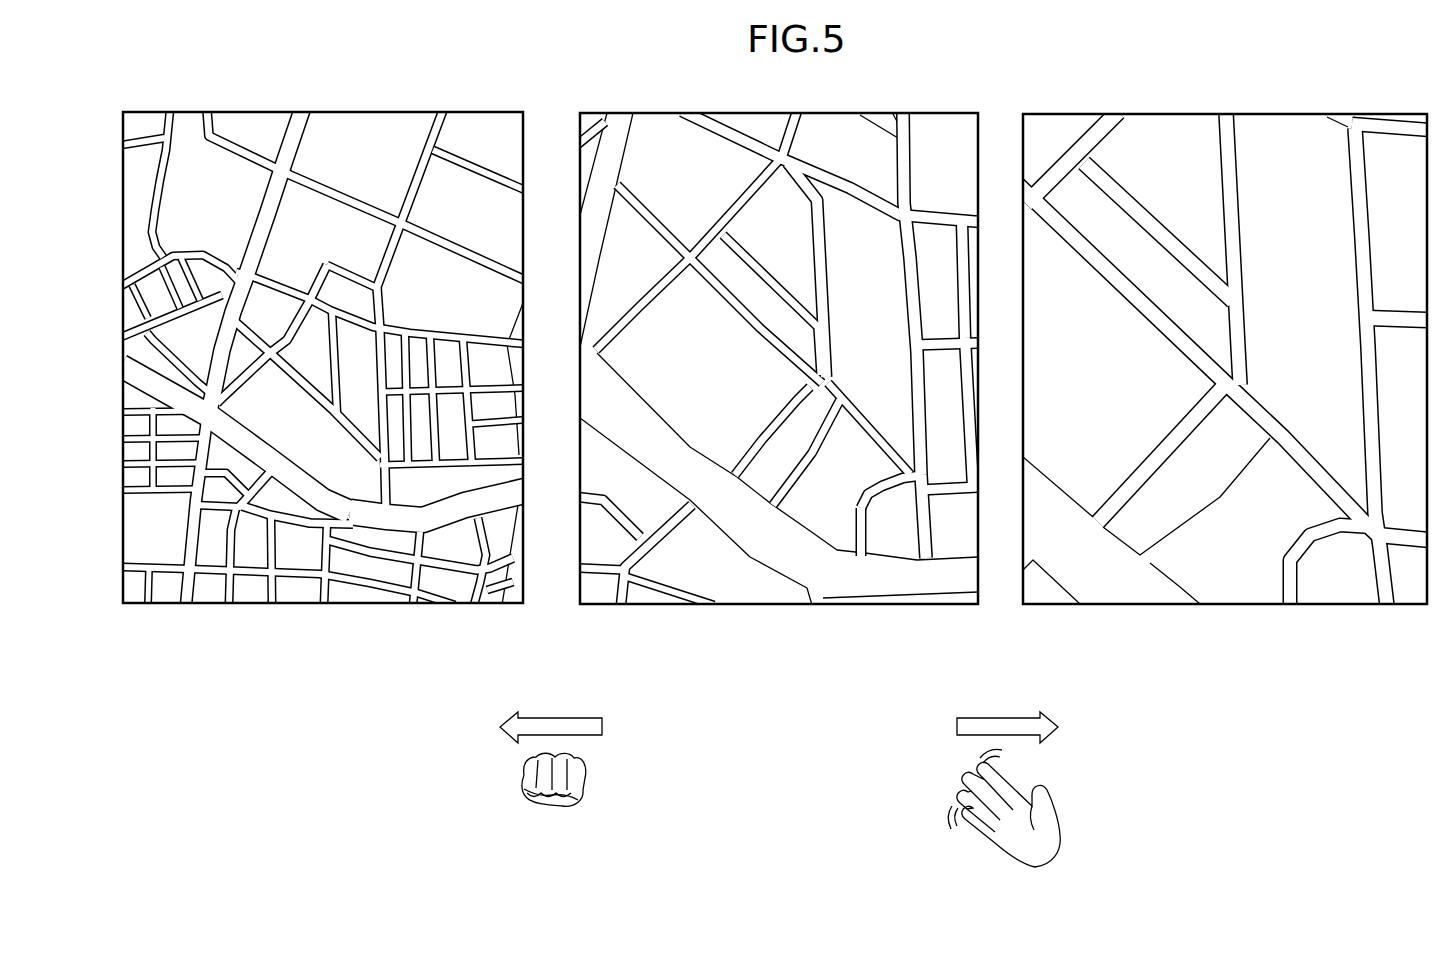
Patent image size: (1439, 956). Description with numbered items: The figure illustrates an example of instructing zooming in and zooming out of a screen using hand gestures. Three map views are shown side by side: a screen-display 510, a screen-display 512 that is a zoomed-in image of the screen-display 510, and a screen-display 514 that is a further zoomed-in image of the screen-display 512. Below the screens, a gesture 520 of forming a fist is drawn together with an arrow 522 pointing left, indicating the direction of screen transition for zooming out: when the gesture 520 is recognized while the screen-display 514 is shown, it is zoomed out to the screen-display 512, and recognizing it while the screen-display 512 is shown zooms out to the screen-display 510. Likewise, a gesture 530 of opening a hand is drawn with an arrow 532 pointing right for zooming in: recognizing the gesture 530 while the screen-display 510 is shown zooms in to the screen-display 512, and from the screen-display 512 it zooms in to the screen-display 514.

The screen-display 510 is at (322, 113).
The screen-display 512 is at (782, 113).
The screen-display 514 is at (1228, 114).
The gesture of forming a fist 520 is at (585, 786).
The arrow 522 is at (548, 718).
The gesture of opening a hand 530 is at (1057, 810).
The arrow 532 is at (1004, 718).